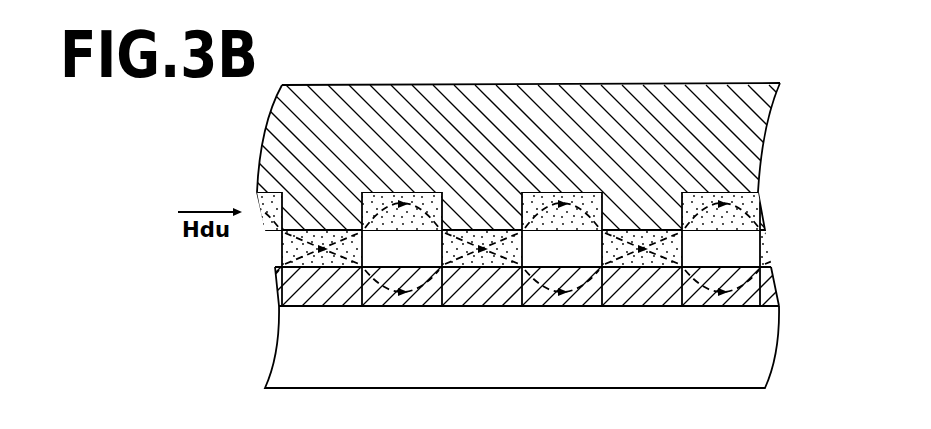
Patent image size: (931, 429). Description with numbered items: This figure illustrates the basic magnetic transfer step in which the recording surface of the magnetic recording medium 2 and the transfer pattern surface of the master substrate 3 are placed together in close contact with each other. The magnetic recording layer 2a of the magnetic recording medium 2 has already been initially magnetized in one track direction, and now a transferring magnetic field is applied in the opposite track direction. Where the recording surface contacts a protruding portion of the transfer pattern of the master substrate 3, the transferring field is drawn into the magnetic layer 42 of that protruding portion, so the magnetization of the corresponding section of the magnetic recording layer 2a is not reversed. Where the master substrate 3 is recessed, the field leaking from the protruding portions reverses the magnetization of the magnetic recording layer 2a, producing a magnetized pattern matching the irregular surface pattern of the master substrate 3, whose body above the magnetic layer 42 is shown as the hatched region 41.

The magnetic recording medium 2 is at (825, 333).
The magnetic recording layer 2a is at (771, 289).
The master substrate 3 is at (524, 225).
The nonmagnetic layer 41 is at (760, 105).
The magnetic layer 42 is at (752, 210).